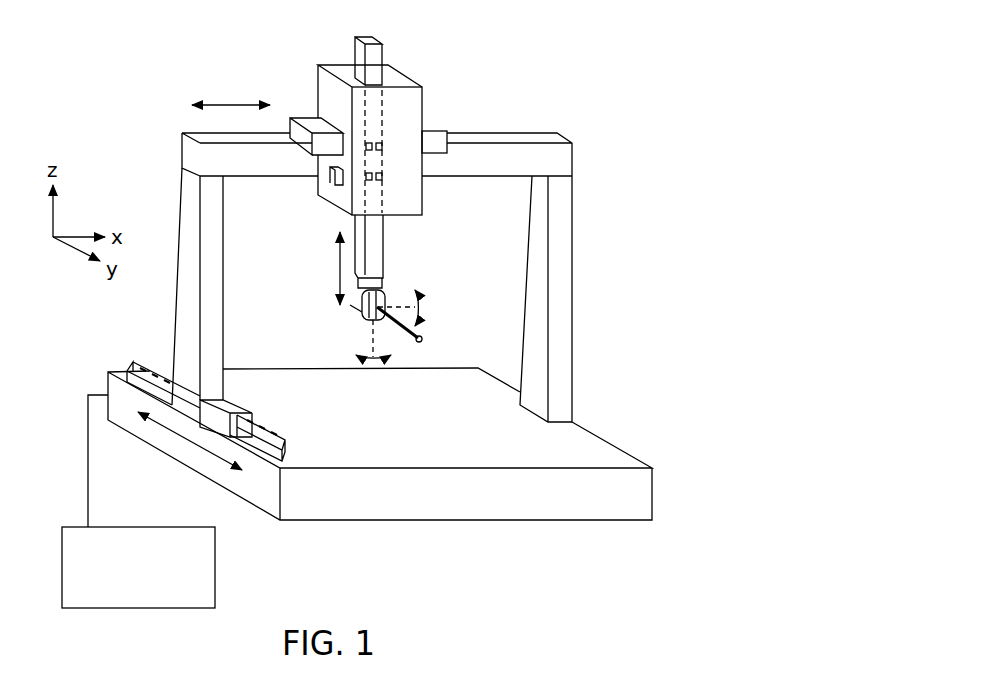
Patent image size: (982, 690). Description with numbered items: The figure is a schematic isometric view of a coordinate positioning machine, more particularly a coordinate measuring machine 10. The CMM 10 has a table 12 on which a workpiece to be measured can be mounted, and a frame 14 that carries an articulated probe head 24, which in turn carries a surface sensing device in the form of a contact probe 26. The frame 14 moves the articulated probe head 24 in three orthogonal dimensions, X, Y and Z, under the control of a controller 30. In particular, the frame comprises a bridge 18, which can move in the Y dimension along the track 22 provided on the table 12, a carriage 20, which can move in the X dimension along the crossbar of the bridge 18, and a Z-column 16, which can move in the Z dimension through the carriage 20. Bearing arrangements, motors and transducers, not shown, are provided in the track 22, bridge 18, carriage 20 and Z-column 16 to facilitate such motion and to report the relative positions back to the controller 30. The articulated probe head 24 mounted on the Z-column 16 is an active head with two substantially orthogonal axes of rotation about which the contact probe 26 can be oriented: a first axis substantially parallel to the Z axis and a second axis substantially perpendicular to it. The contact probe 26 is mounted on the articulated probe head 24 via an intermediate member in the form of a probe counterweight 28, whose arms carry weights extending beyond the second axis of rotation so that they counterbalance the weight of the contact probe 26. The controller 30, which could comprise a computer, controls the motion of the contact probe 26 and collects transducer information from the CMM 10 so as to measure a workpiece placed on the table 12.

The coordinate measuring machine 10 is at (534, 69).
The table 12 is at (393, 504).
The frame 14 is at (145, 128).
The Z-column 16 is at (378, 237).
The bridge 18 is at (526, 150).
The carriage 20 is at (412, 102).
The track 22 is at (126, 362).
The articulated probe head 24 is at (362, 316).
The contact probe 26 is at (422, 338).
The probe counterweight 28 is at (375, 324).
The controller 30 is at (215, 588).